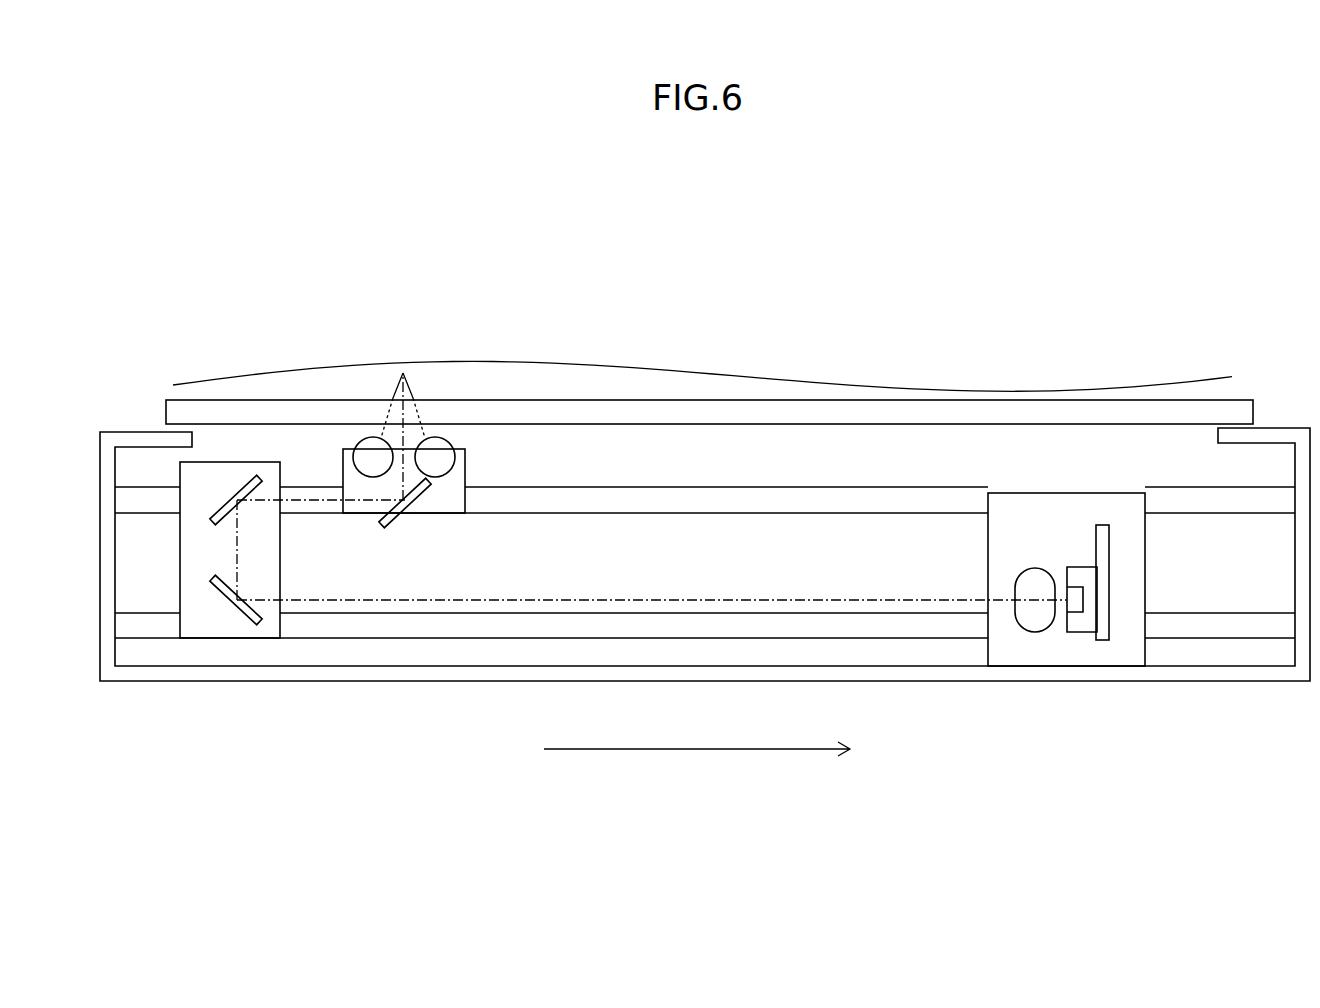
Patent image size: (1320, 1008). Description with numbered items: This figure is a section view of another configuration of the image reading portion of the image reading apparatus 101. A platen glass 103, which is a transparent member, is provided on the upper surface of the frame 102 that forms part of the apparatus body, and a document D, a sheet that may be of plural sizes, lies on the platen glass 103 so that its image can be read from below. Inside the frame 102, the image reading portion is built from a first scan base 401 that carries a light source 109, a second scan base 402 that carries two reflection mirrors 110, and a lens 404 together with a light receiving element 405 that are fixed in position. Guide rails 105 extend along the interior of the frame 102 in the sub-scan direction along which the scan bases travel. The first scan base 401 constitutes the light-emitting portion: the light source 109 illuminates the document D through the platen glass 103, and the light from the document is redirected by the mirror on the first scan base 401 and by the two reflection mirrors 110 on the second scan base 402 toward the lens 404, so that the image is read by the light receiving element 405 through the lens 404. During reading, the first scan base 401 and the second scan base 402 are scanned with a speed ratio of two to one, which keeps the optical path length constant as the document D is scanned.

The image reading apparatus 101 is at (1207, 301).
The frame 102 is at (459, 683).
The platen glass 103 is at (689, 406).
The guide rails 105 is at (886, 492).
The light source 109 is at (373, 455).
The reflection mirrors 110 is at (222, 494).
The first scan base 401 is at (477, 461).
The second scan base 402 is at (287, 559).
The lens 404 is at (1027, 633).
The light receiving element 405 is at (1082, 633).
The document D is at (531, 364).